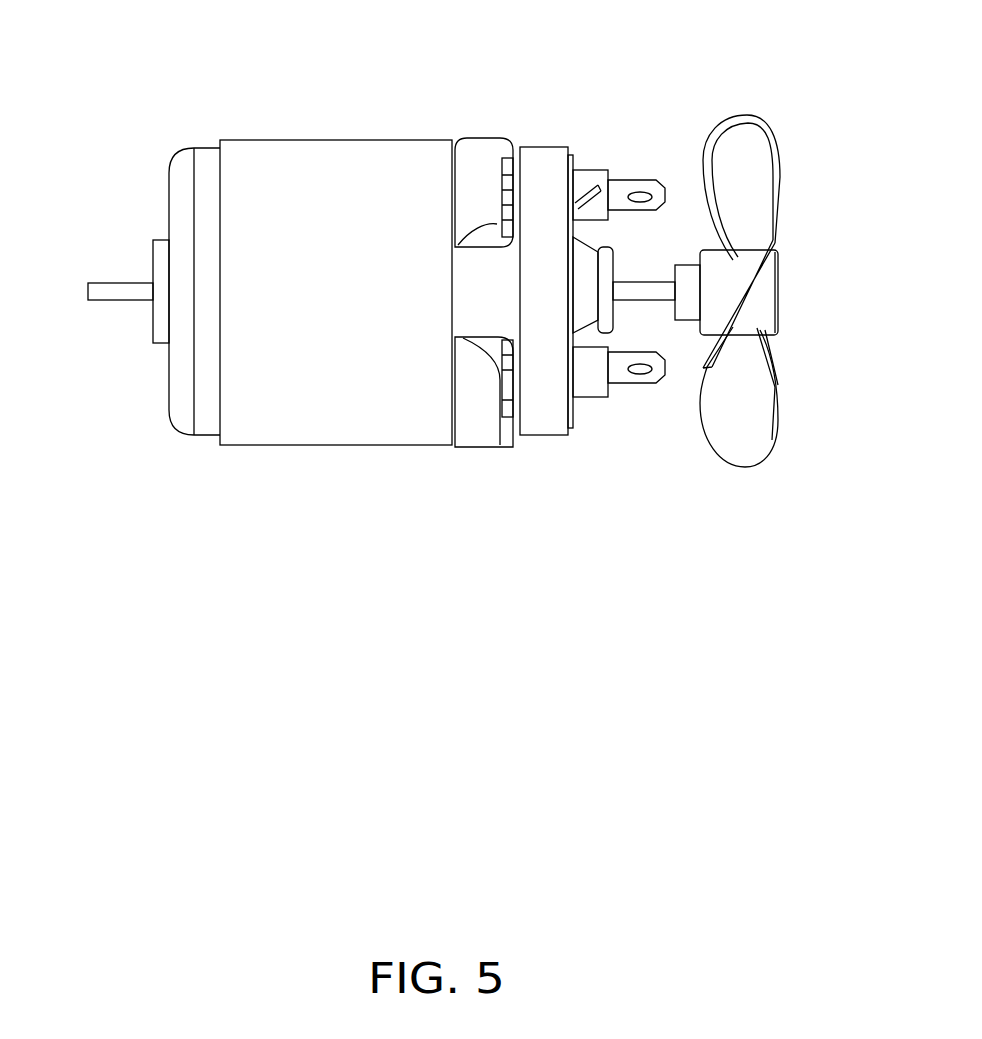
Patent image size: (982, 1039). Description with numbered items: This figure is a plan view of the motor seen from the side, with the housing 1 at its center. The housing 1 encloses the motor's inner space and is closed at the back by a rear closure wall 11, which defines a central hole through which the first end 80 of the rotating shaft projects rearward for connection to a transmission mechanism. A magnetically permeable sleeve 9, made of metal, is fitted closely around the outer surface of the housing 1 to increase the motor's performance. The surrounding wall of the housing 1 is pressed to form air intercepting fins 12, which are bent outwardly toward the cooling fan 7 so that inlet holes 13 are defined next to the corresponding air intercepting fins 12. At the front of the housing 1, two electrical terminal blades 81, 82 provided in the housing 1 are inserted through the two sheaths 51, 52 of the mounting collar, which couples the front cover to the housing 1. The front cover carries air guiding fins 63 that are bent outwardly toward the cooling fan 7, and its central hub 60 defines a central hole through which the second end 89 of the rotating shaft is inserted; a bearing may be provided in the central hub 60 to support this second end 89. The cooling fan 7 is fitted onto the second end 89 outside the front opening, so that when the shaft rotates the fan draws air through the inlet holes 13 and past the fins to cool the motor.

The housing 1 is at (545, 418).
The cooling fan 7 is at (757, 413).
The magnetically permeable sleeve 9 is at (322, 432).
The rear closure wall 11 is at (168, 177).
The air intercepting fins 12 is at (485, 155).
The inlet holes 13 is at (510, 175).
The sheath 51 is at (593, 172).
The sheath 52 is at (592, 385).
The central hub 60 is at (600, 257).
The air guiding fins 63 is at (583, 188).
The first end 80 is at (115, 292).
The electrical terminal blade 81 is at (650, 185).
The electrical terminal blade 82 is at (640, 380).
The second end 89 is at (650, 292).